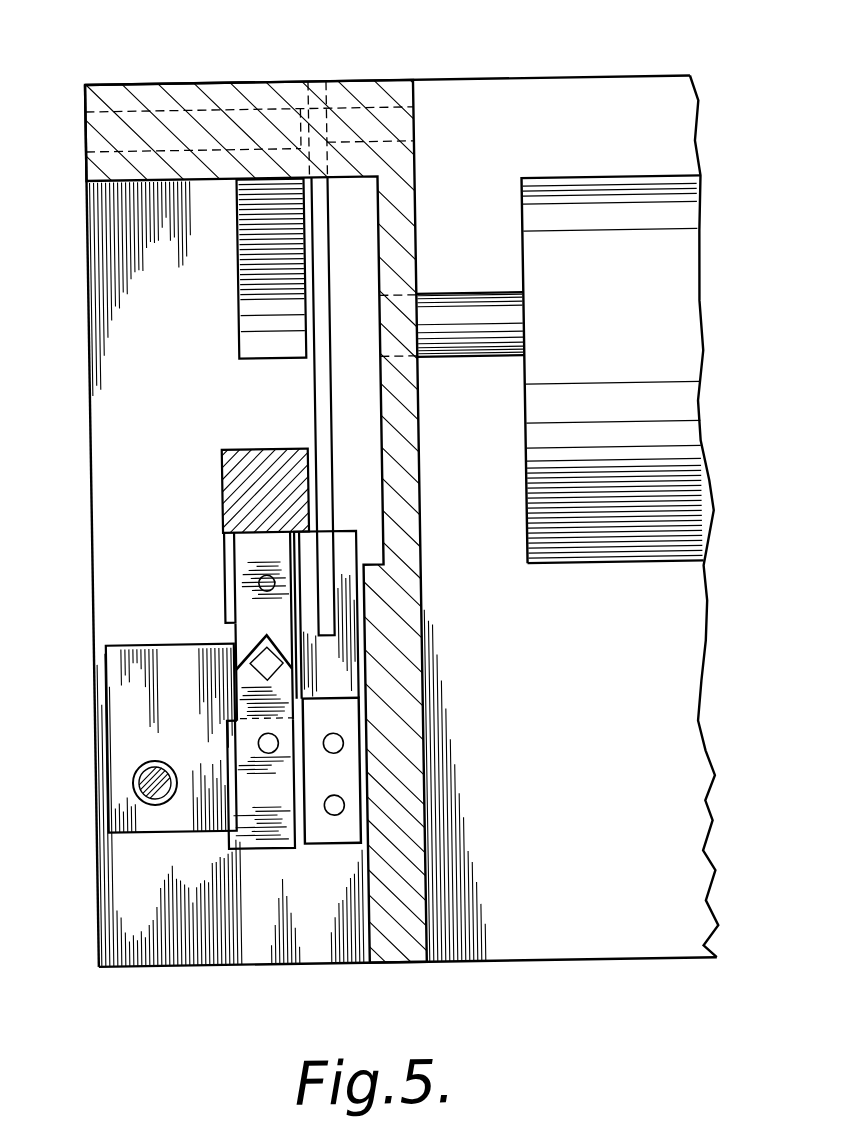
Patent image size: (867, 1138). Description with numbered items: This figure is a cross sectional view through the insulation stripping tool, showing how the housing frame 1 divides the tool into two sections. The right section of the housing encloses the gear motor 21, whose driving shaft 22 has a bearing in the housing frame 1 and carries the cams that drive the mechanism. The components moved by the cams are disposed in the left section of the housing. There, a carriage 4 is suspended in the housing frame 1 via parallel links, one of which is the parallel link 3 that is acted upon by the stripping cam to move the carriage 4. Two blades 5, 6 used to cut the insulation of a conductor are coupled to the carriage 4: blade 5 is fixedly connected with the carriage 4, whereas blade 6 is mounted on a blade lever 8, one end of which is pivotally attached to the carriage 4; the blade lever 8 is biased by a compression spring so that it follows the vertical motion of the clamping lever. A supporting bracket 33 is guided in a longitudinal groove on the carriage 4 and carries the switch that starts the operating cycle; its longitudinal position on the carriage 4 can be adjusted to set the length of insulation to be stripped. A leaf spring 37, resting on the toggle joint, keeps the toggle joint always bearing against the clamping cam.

The housing frame 1 is at (392, 945).
The parallel link 3 is at (313, 410).
The carriage 4 is at (324, 674).
The blade 5 is at (243, 706).
The blade 6 is at (242, 606).
The blade lever 8 is at (216, 482).
The gear motor 21 is at (641, 351).
The driving shaft 22 is at (476, 319).
The supporting bracket 33 is at (119, 814).
The leaf spring 37 is at (242, 295).